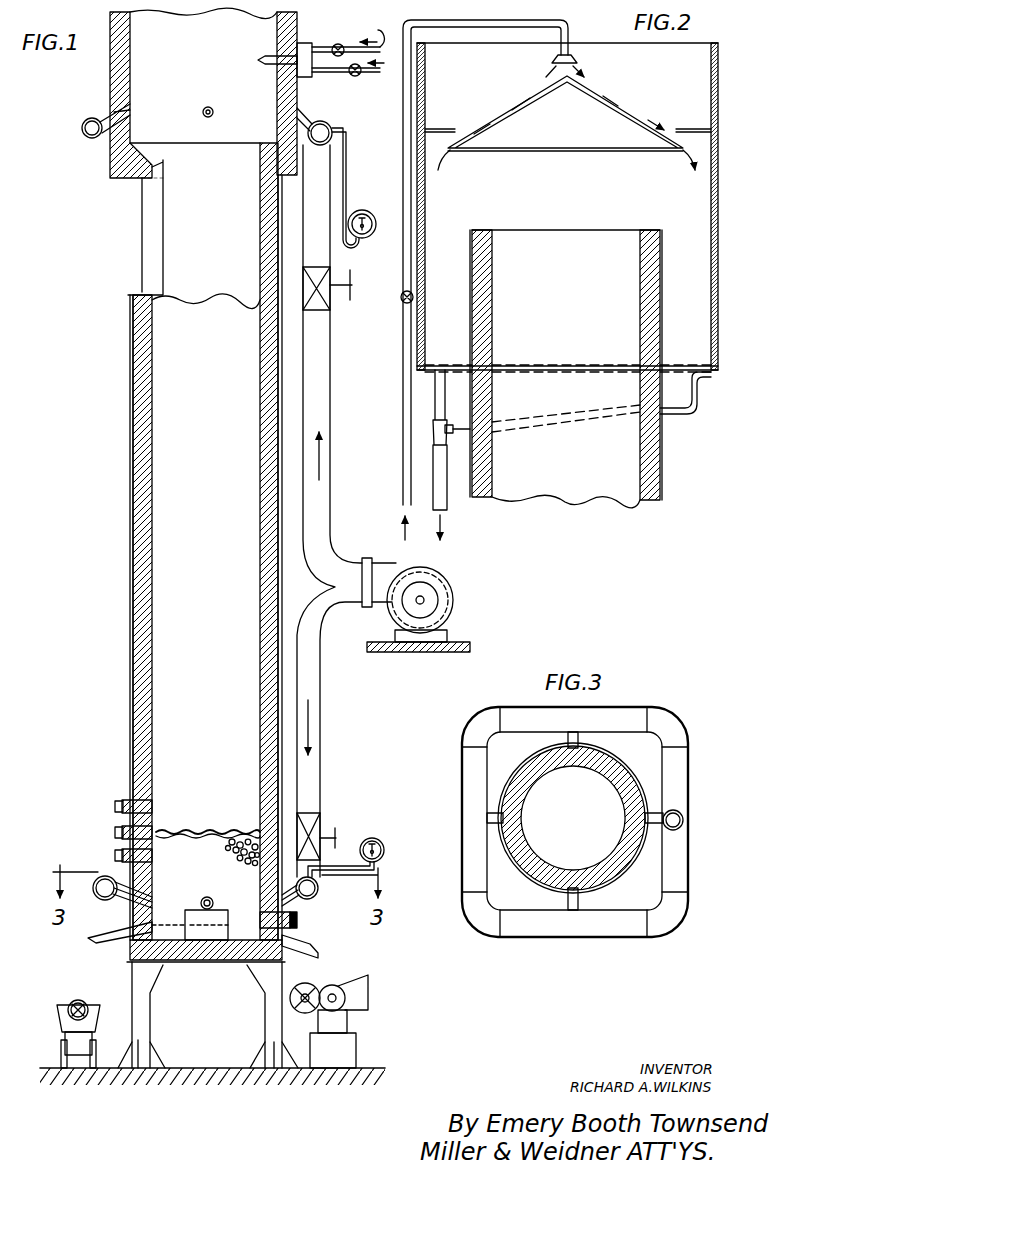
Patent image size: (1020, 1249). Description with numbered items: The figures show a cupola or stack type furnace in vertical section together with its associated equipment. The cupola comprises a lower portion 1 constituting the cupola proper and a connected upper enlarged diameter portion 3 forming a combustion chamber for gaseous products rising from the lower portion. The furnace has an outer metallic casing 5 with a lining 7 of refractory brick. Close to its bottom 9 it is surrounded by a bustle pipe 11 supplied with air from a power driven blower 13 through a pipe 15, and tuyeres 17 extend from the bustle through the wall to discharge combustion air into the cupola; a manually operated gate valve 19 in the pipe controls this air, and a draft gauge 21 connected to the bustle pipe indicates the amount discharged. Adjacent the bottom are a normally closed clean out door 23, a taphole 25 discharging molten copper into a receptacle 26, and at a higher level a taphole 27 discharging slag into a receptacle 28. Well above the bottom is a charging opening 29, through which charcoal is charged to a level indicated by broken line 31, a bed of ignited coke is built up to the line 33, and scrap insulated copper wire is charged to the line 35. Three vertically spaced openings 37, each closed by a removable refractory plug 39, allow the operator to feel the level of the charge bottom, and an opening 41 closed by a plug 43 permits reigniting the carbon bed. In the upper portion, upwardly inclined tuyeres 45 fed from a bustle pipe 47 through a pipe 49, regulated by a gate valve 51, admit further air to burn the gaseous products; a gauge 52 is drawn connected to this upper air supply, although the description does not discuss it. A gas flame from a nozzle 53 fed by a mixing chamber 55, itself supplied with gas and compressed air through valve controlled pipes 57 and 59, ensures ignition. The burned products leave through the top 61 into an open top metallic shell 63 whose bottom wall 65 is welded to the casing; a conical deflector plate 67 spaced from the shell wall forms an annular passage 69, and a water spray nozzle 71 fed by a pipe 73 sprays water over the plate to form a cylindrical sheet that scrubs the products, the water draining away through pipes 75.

In FIG. 1, the lower portion 1 is at (179, 541).
In FIG. 3, the lower portion 1 is at (518, 772).
In FIG. 1, the upper enlarged diameter portion 3 is at (108, 68).
In FIG. 2, the upper enlarged diameter portion 3 is at (664, 290).
In FIG. 1, the outer metallic casing 5 is at (131, 706).
In FIG. 2, the outer metallic casing 5 is at (471, 280).
In FIG. 3, the outer metallic casing 5 is at (618, 780).
In FIG. 1, the lining 7 is at (145, 652).
In FIG. 2, the lining 7 is at (490, 320).
In FIG. 3, the lining 7 is at (516, 800).
In FIG. 1, the bottom 9 is at (217, 930).
In FIG. 1, the bustle pipe 11 is at (318, 892).
In FIG. 3, the bustle pipe 11 is at (462, 788).
In FIG. 1, the blower 13 is at (452, 590).
In FIG. 1, the pipe 15 is at (322, 732).
In FIG. 3, the pipe 15 is at (684, 816).
In FIG. 1, the tuyeres 17 is at (155, 890).
In FIG. 3, the tuyeres 17 is at (578, 740).
In FIG. 1, the gate valve 19 is at (336, 834).
In FIG. 1, the draft gauge 21 is at (383, 845).
In FIG. 1, the clean out door 23 is at (207, 897).
In FIG. 1, the taphole 25 is at (244, 925).
In FIG. 1, the receptacle 26 is at (370, 980).
In FIG. 1, the taphole 27 is at (152, 925).
In FIG. 1, the receptacle 28 is at (62, 1003).
In FIG. 1, the charging opening 29 is at (140, 247).
In FIG. 1, the broken line 31 is at (190, 962).
In FIG. 1, the line 33 is at (212, 828).
In FIG. 1, the line 35 is at (200, 302).
In FIG. 1, the openings 37 is at (152, 795).
In FIG. 1, the plug 39 is at (114, 855).
In FIG. 1, the opening 41 is at (305, 946).
In FIG. 1, the plug 43 is at (298, 920).
In FIG. 1, the tuyeres 45 is at (204, 107).
In FIG. 1, the bustle pipe 47 is at (330, 126).
In FIG. 1, the pipe 49 is at (84, 126).
In FIG. 1, the gate valve 51 is at (351, 285).
In FIG. 1, the pressure gauge 52 is at (366, 210).
In FIG. 1, the nozzle 53 is at (262, 57).
In FIG. 1, the mixing chamber 55 is at (313, 46).
In FIG. 1, the pipe 57 is at (380, 31).
In FIG. 1, the pipe 59 is at (380, 72).
In FIG. 2, the top 61 is at (592, 228).
In FIG. 2, the open top metallic shell 63 is at (426, 86).
In FIG. 2, the bottom wall 65 is at (470, 365).
In FIG. 2, the conical deflector plate 67 is at (618, 106).
In FIG. 2, the annular passage 69 is at (700, 130).
In FIG. 2, the water spray nozzle 71 is at (580, 60).
In FIG. 2, the pipe 73 is at (403, 152).
In FIG. 2, the pipes 75 is at (448, 402).